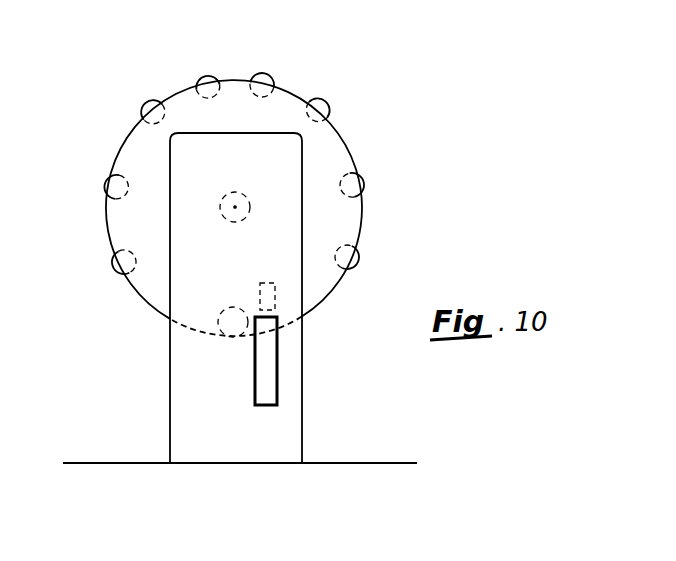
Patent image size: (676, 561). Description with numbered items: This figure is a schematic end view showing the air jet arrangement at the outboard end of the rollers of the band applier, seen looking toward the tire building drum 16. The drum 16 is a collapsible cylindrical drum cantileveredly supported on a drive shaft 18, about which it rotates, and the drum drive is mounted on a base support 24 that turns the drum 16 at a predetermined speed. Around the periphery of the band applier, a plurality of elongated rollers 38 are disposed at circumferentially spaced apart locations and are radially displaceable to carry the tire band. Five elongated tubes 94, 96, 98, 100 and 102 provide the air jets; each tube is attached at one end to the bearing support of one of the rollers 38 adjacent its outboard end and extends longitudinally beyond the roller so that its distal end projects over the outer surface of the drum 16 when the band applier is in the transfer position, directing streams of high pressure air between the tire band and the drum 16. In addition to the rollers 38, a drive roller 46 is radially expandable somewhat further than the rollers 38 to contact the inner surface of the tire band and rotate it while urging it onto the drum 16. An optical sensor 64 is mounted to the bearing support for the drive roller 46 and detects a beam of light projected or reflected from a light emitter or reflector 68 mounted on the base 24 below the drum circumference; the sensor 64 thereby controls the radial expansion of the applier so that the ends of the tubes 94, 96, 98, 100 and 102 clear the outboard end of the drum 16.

The drum 16 is at (299, 95).
The drive shaft 18 is at (243, 195).
The base support 24 is at (272, 421).
The rollers 38 is at (210, 77).
The drive roller 46 is at (228, 306).
The optical sensor 64 is at (275, 290).
The light emitter or reflector 68 is at (277, 353).
The elongated tube 94 is at (207, 78).
The elongated tube 96 is at (148, 106).
The elongated tube 98 is at (117, 263).
The elongated tube 100 is at (330, 107).
The elongated tube 102 is at (360, 257).